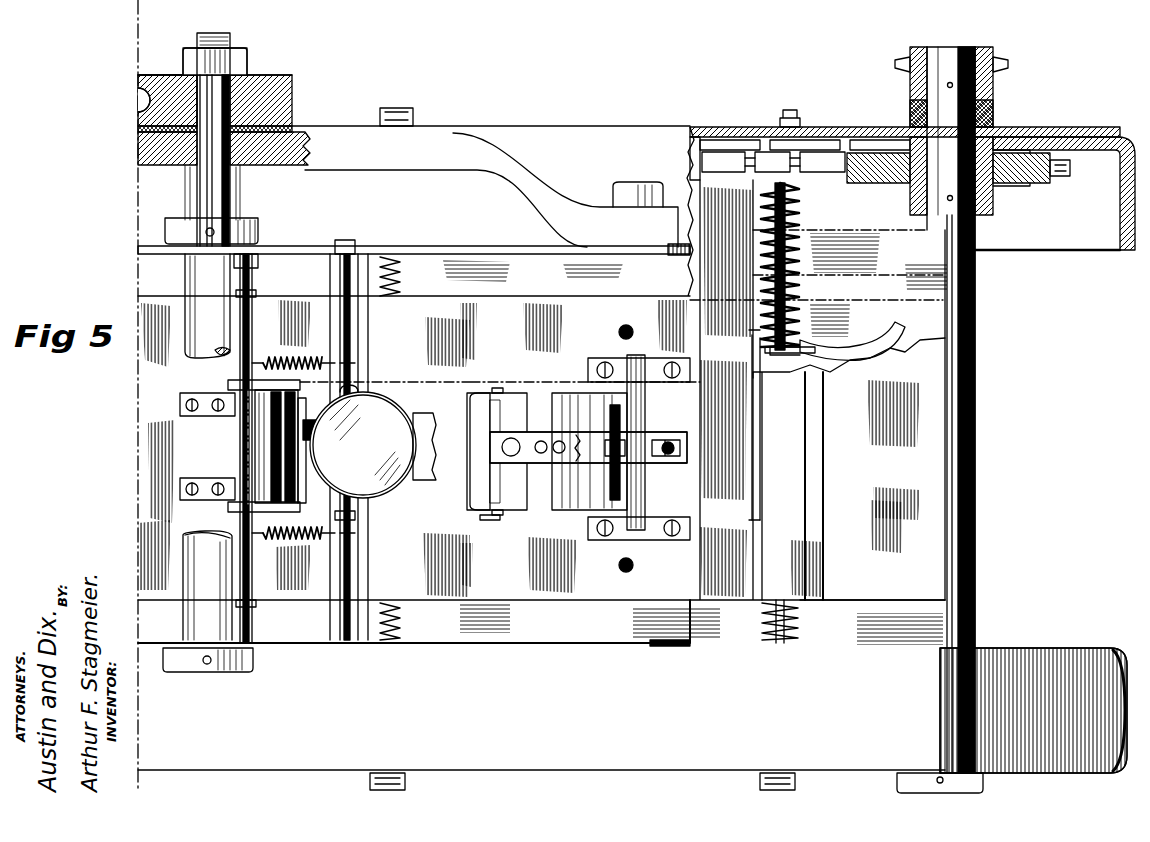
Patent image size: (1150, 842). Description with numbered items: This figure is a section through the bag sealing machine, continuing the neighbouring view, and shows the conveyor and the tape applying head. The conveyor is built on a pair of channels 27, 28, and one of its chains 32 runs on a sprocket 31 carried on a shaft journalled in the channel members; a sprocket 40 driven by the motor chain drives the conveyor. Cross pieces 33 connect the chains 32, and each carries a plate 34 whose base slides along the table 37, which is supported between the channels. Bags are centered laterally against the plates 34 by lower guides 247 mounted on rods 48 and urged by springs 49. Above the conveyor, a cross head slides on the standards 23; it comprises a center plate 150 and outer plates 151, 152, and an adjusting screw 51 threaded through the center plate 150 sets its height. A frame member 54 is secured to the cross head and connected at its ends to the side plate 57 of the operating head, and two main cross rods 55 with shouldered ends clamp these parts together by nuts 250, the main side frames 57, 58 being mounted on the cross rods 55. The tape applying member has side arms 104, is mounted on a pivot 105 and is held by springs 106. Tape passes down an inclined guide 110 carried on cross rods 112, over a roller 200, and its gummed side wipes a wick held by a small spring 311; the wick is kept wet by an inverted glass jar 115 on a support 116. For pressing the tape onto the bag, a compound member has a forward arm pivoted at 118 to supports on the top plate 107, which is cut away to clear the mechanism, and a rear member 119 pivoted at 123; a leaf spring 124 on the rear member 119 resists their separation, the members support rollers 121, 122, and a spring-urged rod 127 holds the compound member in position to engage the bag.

The standards 23 is at (288, 101).
The channel 27 is at (578, 130).
The channel 28 is at (1002, 660).
The sprocket 31 is at (1005, 183).
The chains 32 is at (710, 150).
The cross pieces 33 is at (742, 460).
The plate 34 is at (758, 405).
The table 37 is at (907, 275).
The sprocket 40 is at (905, 78).
The rods 48 is at (795, 208).
The springs 49 is at (797, 220).
The adjusting screw 51 is at (138, 97).
The frame member 54 is at (138, 148).
The main cross rods 55 is at (232, 204).
The main side frame 57 is at (465, 253).
The main side frame 58 is at (452, 648).
The side arms 104 is at (230, 384).
The pivot 105 is at (258, 280).
The springs 106 is at (290, 357).
The top plate 107 is at (142, 505).
The inclined guide 110 is at (428, 472).
The cross rods 112 is at (345, 240).
The glass jar 115 is at (380, 408).
The support 116 is at (370, 340).
The pivot 118 is at (628, 492).
The rear member 119 is at (508, 513).
The roller 121 is at (476, 435).
The roller 122 is at (556, 493).
The pivot 123 is at (645, 430).
The leaf spring 124 is at (538, 433).
The rod 127 is at (642, 463).
The center plate 150 is at (168, 92).
The outer plate 151 is at (290, 75).
The outer plate 152 is at (138, 130).
The roller 200 is at (262, 435).
The lower guides 247 is at (902, 330).
The nuts 250 is at (246, 48).
The spring 311 is at (280, 450).